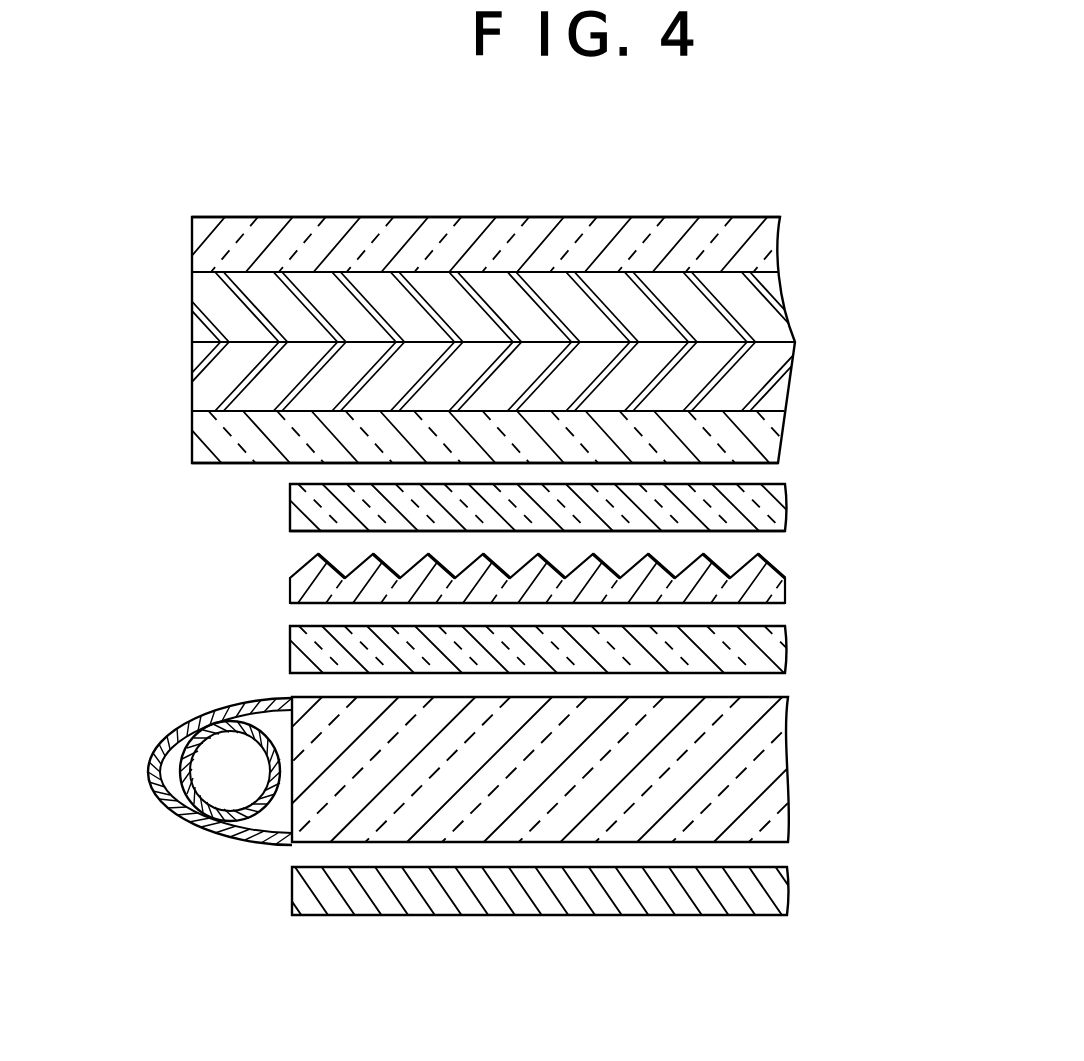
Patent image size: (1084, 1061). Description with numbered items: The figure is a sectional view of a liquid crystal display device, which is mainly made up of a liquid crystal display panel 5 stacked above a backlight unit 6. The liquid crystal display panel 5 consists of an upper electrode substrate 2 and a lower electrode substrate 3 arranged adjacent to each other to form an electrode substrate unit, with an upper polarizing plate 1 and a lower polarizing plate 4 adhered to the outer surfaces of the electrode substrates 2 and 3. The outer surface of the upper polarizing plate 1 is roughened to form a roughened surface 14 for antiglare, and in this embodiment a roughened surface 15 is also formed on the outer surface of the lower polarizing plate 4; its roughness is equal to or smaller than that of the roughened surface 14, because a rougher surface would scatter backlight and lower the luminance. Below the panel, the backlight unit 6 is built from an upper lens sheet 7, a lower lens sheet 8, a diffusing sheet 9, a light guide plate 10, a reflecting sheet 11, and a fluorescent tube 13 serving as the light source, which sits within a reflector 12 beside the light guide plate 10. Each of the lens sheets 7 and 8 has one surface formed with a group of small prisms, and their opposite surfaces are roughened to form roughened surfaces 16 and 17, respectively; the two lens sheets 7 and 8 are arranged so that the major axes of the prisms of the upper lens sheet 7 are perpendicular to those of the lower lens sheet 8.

The upper polarizing plate 1 is at (763, 248).
The upper electrode substrate 2 is at (768, 306).
The lower electrode substrate 3 is at (775, 385).
The lower polarizing plate 4 is at (770, 438).
The liquid crystal display panel 5 is at (858, 214).
The backlight unit 6 is at (867, 486).
The upper lens sheet 7 is at (778, 505).
The lower lens sheet 8 is at (778, 578).
The diffusing sheet 9 is at (776, 645).
The light guide plate 10 is at (768, 780).
The reflecting sheet 11 is at (778, 886).
The reflector 12 is at (166, 803).
The fluorescent tube 13 is at (232, 822).
The roughened surface 14 is at (540, 216).
The roughened surface 15 is at (215, 463).
The roughened surface 16 is at (327, 533).
The roughened surface 17 is at (312, 605).